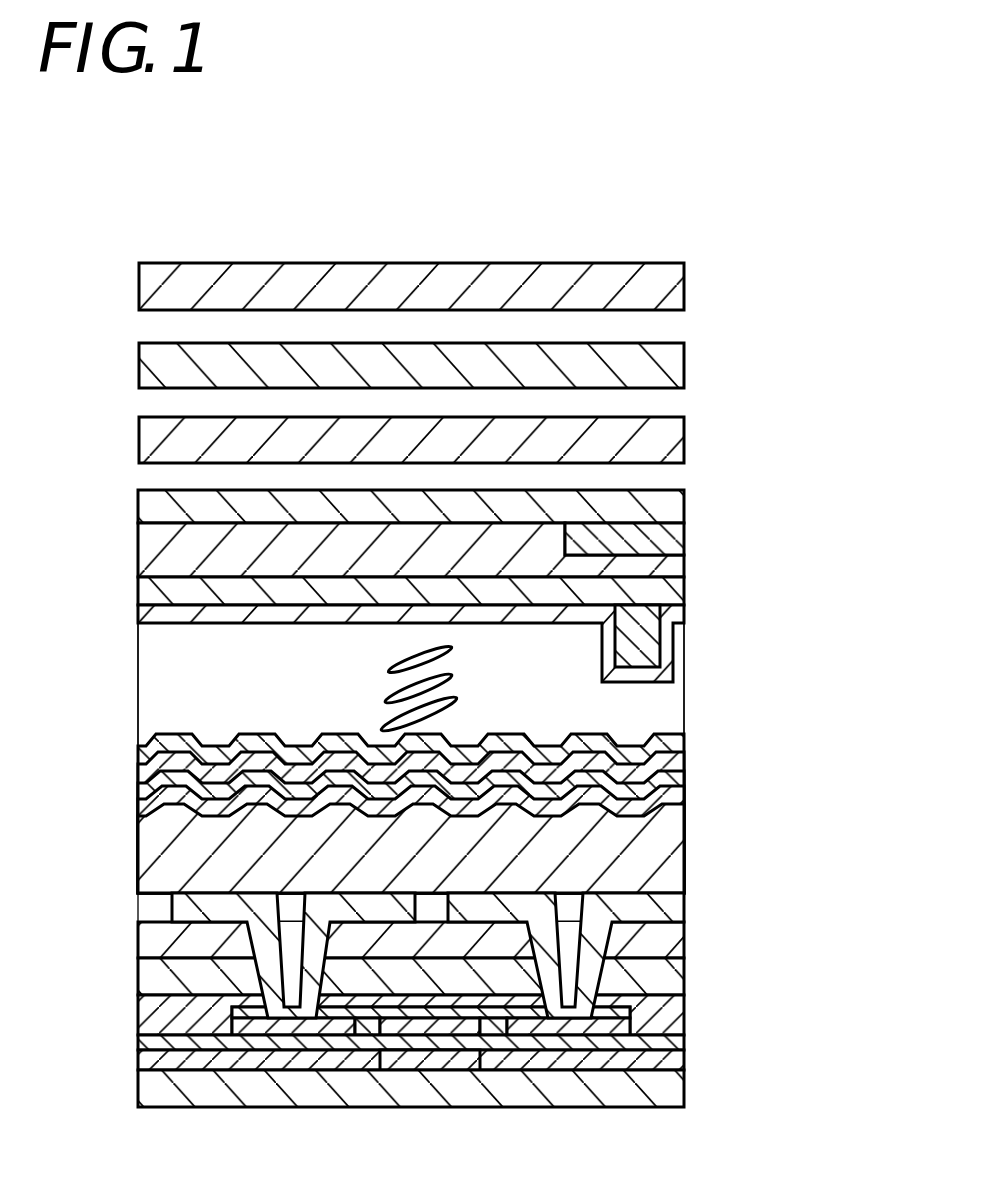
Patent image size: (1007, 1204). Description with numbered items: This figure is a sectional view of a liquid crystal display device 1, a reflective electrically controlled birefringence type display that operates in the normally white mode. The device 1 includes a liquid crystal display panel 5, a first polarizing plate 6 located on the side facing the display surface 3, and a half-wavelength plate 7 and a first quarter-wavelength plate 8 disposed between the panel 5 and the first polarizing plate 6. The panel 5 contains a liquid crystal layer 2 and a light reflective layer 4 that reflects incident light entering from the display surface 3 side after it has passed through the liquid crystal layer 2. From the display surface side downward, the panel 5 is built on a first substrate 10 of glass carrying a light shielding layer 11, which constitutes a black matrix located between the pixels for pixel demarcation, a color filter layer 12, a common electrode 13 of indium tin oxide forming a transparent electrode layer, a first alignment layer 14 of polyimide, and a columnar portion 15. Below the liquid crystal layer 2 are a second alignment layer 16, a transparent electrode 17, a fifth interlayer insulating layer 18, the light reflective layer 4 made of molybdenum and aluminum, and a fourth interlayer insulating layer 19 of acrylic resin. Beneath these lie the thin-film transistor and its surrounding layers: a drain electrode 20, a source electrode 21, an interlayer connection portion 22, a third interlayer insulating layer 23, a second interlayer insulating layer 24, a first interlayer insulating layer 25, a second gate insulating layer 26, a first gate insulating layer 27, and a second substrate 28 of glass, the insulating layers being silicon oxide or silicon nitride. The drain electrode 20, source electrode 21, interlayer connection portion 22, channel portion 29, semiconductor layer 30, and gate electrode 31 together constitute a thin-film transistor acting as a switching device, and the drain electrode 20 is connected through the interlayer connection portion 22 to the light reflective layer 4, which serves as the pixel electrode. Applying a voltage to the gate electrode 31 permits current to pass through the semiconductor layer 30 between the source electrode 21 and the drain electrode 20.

The liquid crystal display device 1 is at (642, 141).
The liquid crystal layer 2 is at (165, 680).
The display surface 3 is at (558, 263).
The light reflective layer 4 is at (655, 803).
The liquid crystal display panel 5 is at (747, 483).
The first polarizing plate 6 is at (655, 288).
The half-wavelength plate 7 is at (655, 370).
The first quarter-wavelength plate 8 is at (655, 435).
The first substrate 10 is at (648, 503).
The light shielding layer 11 is at (650, 532).
The color filter layer 12 is at (653, 560).
The common electrode 13 is at (653, 588).
The first alignment layer 14 is at (672, 613).
The columnar portion 15 is at (650, 647).
The second alignment layer 16 is at (655, 740).
The transparent electrode 17 is at (655, 760).
The fifth interlayer insulating layer 18 is at (655, 780).
The fourth interlayer insulating layer 19 is at (650, 845).
The drain electrode 20 is at (652, 905).
The source electrode 21 is at (187, 905).
The interlayer connection portion 22 is at (267, 973).
The third interlayer insulating layer 23 is at (652, 940).
The second interlayer insulating layer 24 is at (652, 978).
The first interlayer insulating layer 25 is at (655, 1012).
The second gate insulating layer 26 is at (655, 1040).
The first gate insulating layer 27 is at (652, 1062).
The second substrate 28 is at (655, 1092).
The channel portion 29 is at (422, 1027).
The semiconductor layer 30 is at (293, 1027).
The gate electrode 31 is at (452, 1057).